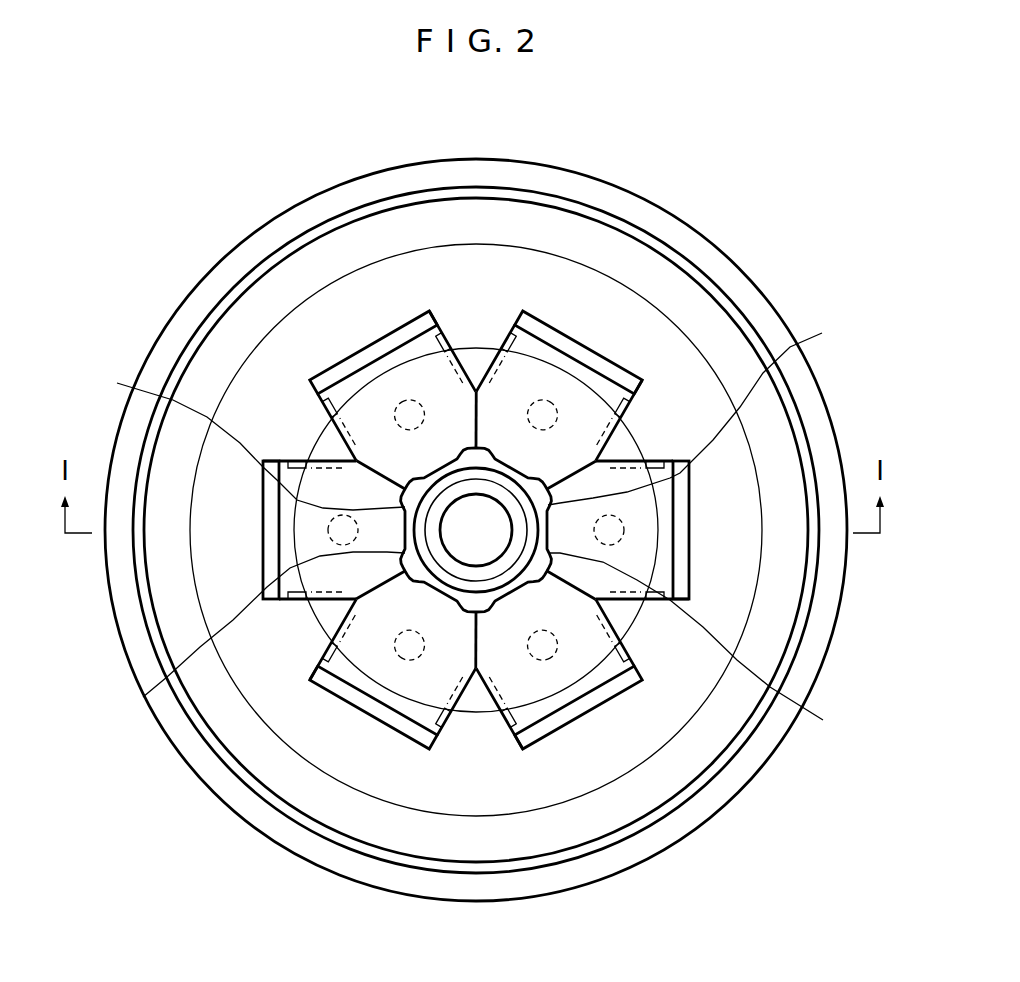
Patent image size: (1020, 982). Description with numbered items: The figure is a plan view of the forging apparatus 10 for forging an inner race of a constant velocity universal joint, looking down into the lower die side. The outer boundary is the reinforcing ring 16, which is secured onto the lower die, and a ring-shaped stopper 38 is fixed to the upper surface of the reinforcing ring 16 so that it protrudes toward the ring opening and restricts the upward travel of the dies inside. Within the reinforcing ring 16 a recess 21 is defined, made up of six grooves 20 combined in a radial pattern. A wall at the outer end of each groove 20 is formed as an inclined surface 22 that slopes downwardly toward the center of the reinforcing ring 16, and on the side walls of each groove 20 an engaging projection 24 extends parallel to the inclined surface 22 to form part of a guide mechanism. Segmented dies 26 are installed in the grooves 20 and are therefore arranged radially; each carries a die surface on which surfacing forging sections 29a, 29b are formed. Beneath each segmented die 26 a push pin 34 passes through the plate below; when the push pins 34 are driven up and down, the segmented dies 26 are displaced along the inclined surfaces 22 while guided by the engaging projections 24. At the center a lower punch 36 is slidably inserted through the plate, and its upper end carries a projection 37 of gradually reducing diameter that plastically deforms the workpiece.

The forging apparatus 10 is at (694, 128).
The reinforcing ring 16 is at (737, 376).
The grooves 20 is at (690, 496).
The recess 21 is at (613, 357).
The inclined surface 22 is at (690, 527).
The engaging projection 24 is at (477, 285).
The segmented dies 26 is at (690, 598).
The surfacing forging section 29a is at (468, 553).
The surfacing forging section 29b is at (469, 513).
The push pins 34 is at (624, 535).
The lower punch 36 is at (467, 573).
The projection 37 is at (476, 530).
The ring-shaped stopper 38 is at (717, 700).